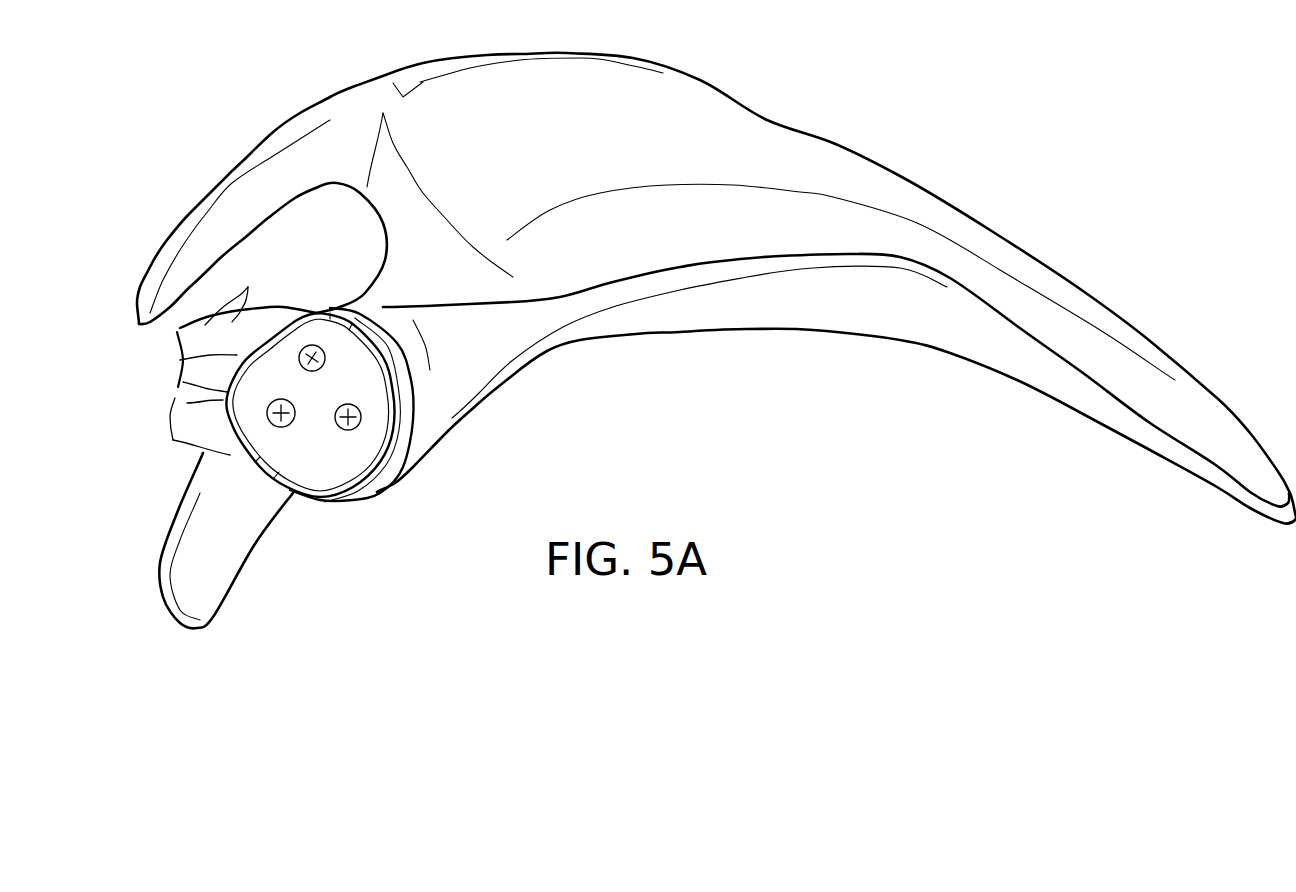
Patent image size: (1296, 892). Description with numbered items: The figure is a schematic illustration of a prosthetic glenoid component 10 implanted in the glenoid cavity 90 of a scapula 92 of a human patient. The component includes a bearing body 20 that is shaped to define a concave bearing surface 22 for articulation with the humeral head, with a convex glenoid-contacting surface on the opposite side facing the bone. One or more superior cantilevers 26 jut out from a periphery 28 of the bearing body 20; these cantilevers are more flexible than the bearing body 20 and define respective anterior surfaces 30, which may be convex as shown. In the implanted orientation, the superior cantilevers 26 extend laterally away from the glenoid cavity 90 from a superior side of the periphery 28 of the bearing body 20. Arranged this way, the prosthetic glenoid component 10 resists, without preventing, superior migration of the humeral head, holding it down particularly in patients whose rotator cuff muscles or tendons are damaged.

The prosthetic glenoid component 10 is at (143, 370).
The bearing body 20 is at (357, 510).
The concave bearing surface 22 is at (318, 448).
The superior cantilevers 26 is at (248, 291).
The periphery 28 is at (280, 303).
The anterior surfaces 30 is at (180, 418).
The glenoid cavity 90 is at (377, 493).
The scapula 92 is at (693, 112).